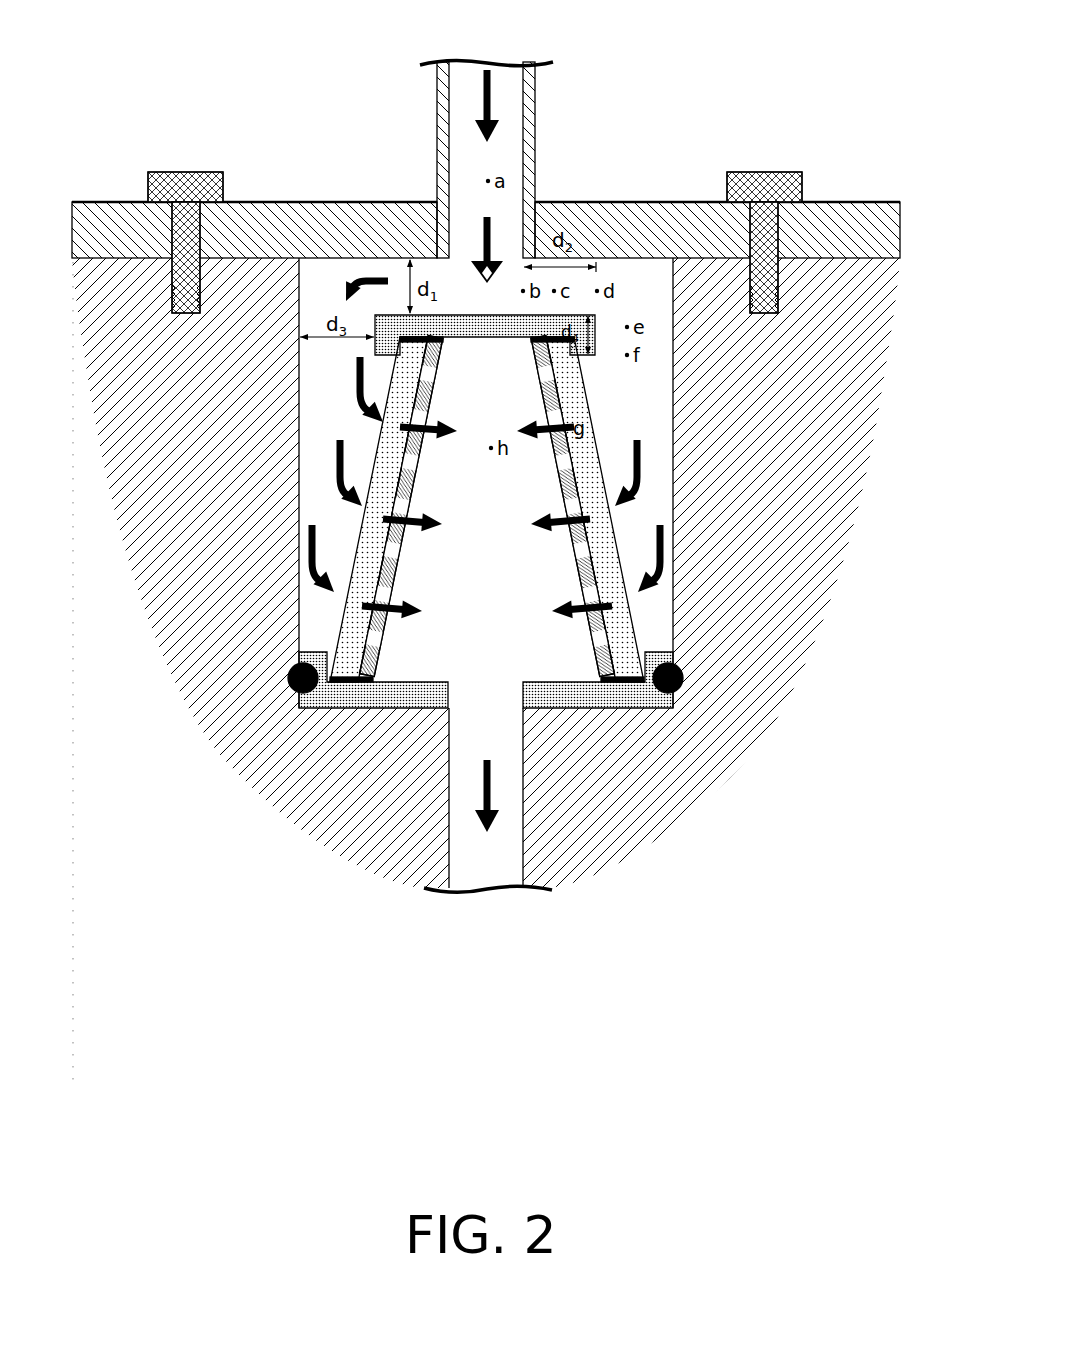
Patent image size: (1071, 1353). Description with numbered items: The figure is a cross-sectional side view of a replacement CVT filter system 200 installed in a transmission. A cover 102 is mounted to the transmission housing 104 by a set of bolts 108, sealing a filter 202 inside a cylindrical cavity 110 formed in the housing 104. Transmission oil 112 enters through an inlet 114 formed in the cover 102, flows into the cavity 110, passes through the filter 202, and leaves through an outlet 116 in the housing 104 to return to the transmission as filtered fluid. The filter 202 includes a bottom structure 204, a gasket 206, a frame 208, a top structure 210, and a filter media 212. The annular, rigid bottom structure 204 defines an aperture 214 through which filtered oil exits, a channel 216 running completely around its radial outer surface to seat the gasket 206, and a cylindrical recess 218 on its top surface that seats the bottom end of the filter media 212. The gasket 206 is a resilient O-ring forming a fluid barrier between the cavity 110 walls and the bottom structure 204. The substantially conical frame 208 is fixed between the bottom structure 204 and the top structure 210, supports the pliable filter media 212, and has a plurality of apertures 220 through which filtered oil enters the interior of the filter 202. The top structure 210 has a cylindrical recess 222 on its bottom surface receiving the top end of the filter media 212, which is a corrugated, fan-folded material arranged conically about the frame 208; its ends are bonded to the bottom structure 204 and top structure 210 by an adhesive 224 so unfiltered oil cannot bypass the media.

The replacement CVT filter system 200 is at (243, 106).
The cover 102 is at (313, 218).
The transmission housing 104 is at (208, 402).
The bolts 108 is at (184, 177).
The cylindrical cavity 110 is at (655, 498).
The transmission oil 112 is at (484, 222).
The inlet 114 is at (505, 157).
The outlet 116 is at (510, 796).
The filter 202 is at (360, 535).
The bottom structure 204 is at (377, 708).
The gasket 206 is at (688, 680).
The frame 208 is at (390, 592).
The top structure 210 is at (461, 341).
The filter media 212 is at (568, 405).
The aperture 214 is at (458, 690).
The channel 216 is at (628, 692).
The recess 218 is at (561, 676).
The apertures 220 is at (558, 478).
The cylindrical recess 222 is at (519, 342).
The adhesive 224 is at (430, 340).